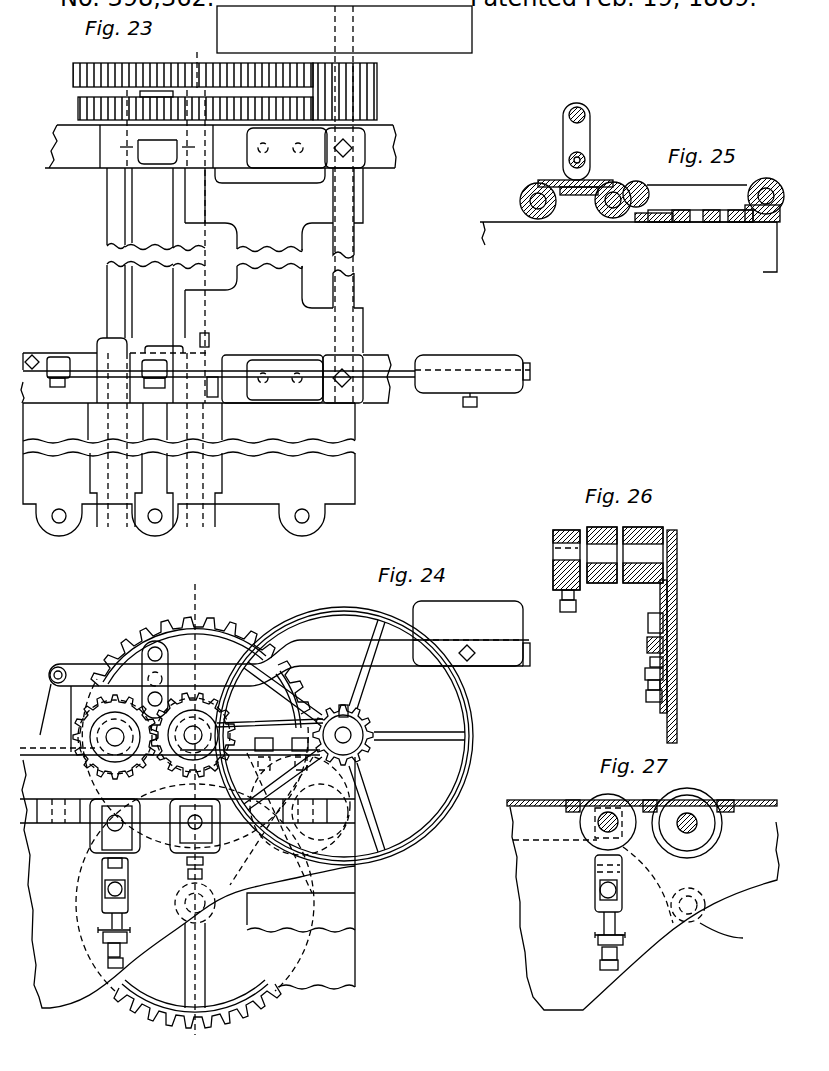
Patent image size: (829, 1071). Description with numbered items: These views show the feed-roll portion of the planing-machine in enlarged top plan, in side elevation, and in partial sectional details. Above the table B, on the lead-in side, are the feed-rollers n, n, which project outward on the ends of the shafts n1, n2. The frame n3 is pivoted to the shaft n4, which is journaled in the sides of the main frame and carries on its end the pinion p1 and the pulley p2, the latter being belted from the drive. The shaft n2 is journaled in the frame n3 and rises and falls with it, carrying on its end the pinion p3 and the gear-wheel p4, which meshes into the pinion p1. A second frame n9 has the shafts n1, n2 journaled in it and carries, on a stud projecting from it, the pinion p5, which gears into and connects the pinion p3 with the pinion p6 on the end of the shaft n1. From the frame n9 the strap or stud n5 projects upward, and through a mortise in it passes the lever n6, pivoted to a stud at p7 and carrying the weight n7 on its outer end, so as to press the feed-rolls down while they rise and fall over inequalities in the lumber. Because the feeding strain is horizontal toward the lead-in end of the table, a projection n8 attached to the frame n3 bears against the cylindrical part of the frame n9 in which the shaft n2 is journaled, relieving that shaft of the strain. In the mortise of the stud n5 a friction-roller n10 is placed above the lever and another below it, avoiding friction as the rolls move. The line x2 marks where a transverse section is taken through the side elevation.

In FIG. 23, the pinion p1 is at (377, 80).
In FIG. 23, the pulley p2 is at (344, 29).
In FIG. 23, the pinion p3 is at (201, 63).
In FIG. 24, the pinion p3 is at (253, 632).
In FIG. 23, the gear-wheel p4 is at (78, 64).
In FIG. 24, the gear-wheel p4 is at (174, 617).
In FIG. 23, the pinion p5 is at (160, 97).
In FIG. 24, the pinion p5 is at (220, 630).
In FIG. 23, the pinion p6 is at (78, 104).
In FIG. 24, the pinion p6 is at (97, 667).
In FIG. 23, the pivot stud p7 is at (55, 357).
In FIG. 24, the pivot stud p7 is at (55, 667).
In FIG. 23, the feed-rollers n is at (155, 465).
In FIG. 24, the feed-rollers n is at (231, 720).
In FIG. 23, the shaft n1 is at (113, 308).
In FIG. 25, the shaft n1 is at (530, 203).
In FIG. 24, the shaft n1 is at (84, 760).
In FIG. 23, the shaft n2 is at (204, 258).
In FIG. 25, the shaft n2 is at (600, 204).
In FIG. 24, the shaft n2 is at (189, 738).
In FIG. 23, the frame n3 is at (165, 372).
In FIG. 25, the frame n3 is at (740, 188).
In FIG. 23, the shaft n4 is at (355, 240).
In FIG. 25, the shaft n4 is at (784, 193).
In FIG. 23, the strap or stud n5 is at (162, 363).
In FIG. 25, the strap or stud n5 is at (589, 111).
In FIG. 24, the strap or stud n5 is at (153, 641).
In FIG. 23, the lever n6 is at (219, 390).
In FIG. 24, the lever n6 is at (286, 696).
In FIG. 23, the weight n7 is at (472, 373).
In FIG. 24, the weight n7 is at (471, 633).
In FIG. 23, the projection n8 is at (227, 405).
In FIG. 25, the projection n8 is at (638, 181).
In FIG. 23, the frame n9 is at (165, 308).
In FIG. 25, the frame n9 is at (609, 178).
In FIG. 23, the friction-roller n10 is at (209, 338).
In FIG. 25, the friction-roller n10 is at (575, 108).
In FIG. 24, the section line x2 is at (195, 812).
In FIG. 23, the table B is at (189, 469).
In FIG. 27, the table B is at (644, 908).
In FIG. 24, the table B is at (47, 824).